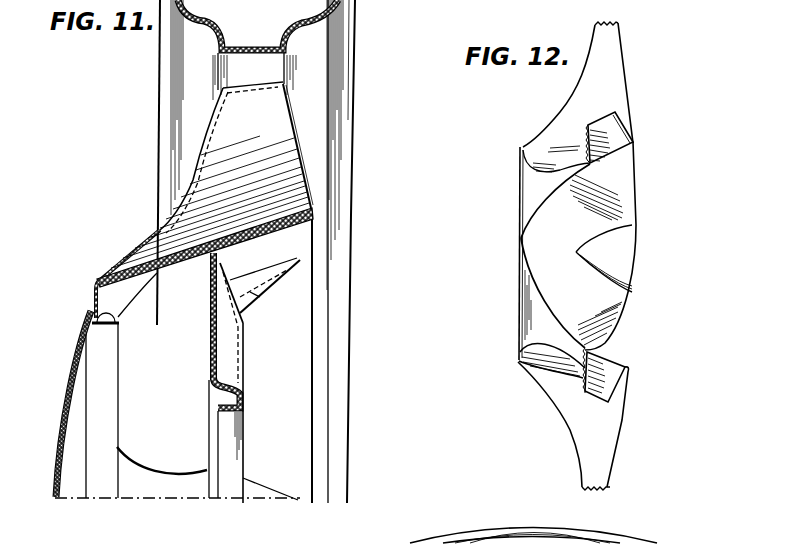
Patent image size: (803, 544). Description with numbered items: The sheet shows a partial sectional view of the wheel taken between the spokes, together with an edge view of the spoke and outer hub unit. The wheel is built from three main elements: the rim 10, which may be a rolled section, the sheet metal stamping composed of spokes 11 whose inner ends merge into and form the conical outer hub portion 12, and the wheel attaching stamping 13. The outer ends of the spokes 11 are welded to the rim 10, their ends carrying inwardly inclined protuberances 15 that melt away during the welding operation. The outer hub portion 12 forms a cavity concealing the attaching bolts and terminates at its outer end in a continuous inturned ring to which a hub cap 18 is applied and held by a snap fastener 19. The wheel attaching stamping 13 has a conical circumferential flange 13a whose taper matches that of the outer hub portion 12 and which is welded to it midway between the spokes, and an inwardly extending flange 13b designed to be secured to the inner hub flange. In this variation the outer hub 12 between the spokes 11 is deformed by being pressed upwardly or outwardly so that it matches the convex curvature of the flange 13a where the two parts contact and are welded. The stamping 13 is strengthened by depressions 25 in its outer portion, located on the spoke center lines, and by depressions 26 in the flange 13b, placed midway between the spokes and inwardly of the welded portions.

In FIG. 11, the rim 10 is at (318, 70).
In FIG. 12, the rim 10 is at (443, 543).
In FIG. 11, the spokes 11 is at (205, 165).
In FIG. 12, the spokes 11 is at (612, 82).
In FIG. 11, the outer hub portion 12 is at (157, 275).
In FIG. 12, the outer hub portion 12 is at (527, 163).
In FIG. 11, the wheel attaching stamping 13 is at (208, 330).
In FIG. 11, the circumferential flange 13a is at (287, 232).
In FIG. 11, the inwardly extending flange 13b is at (212, 365).
In FIG. 12, the protuberances 15 is at (613, 22).
In FIG. 11, the hub cap 18 is at (65, 385).
In FIG. 11, the snap fastener 19 is at (118, 318).
In FIG. 11, the strengthening depressions 25 is at (267, 303).
In FIG. 11, the strengthening depressions 26 is at (222, 363).